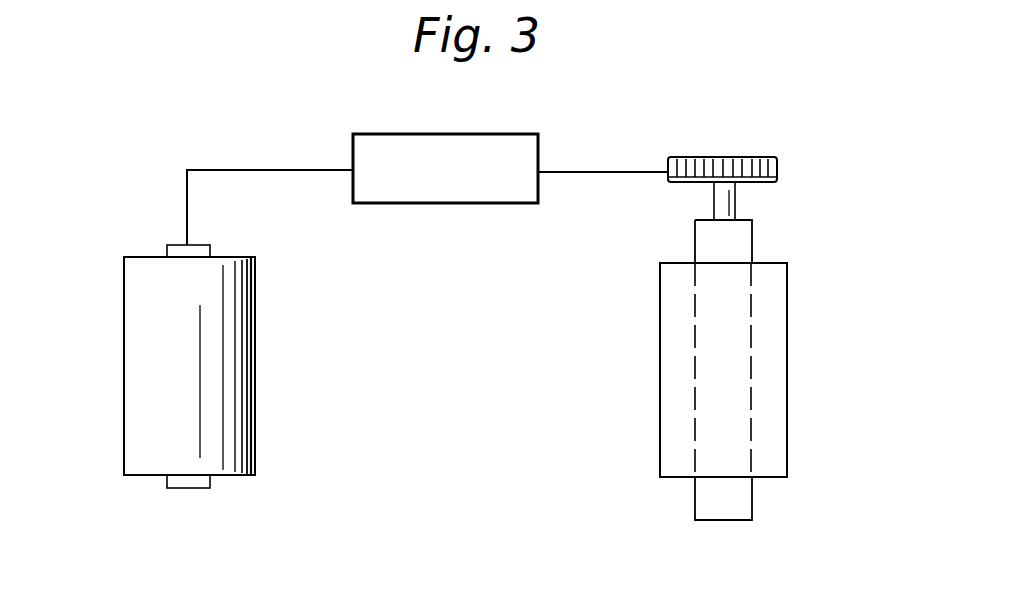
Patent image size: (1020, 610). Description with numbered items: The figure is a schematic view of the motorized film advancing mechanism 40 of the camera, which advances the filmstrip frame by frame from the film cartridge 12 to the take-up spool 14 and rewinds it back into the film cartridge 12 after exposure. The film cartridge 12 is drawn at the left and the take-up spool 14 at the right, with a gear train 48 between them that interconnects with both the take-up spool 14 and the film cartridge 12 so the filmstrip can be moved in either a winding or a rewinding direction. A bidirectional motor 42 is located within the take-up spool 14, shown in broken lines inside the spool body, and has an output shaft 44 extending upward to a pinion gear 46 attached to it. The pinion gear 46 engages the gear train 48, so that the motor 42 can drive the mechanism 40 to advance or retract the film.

The motorized film advancing mechanism 40 is at (226, 124).
The film cartridge 12 is at (232, 356).
The gear train 48 is at (446, 206).
The pinion gear 46 is at (763, 157).
The output shaft 44 is at (736, 200).
The take-up spool 14 is at (660, 356).
The bidirectional motor 42 is at (753, 365).